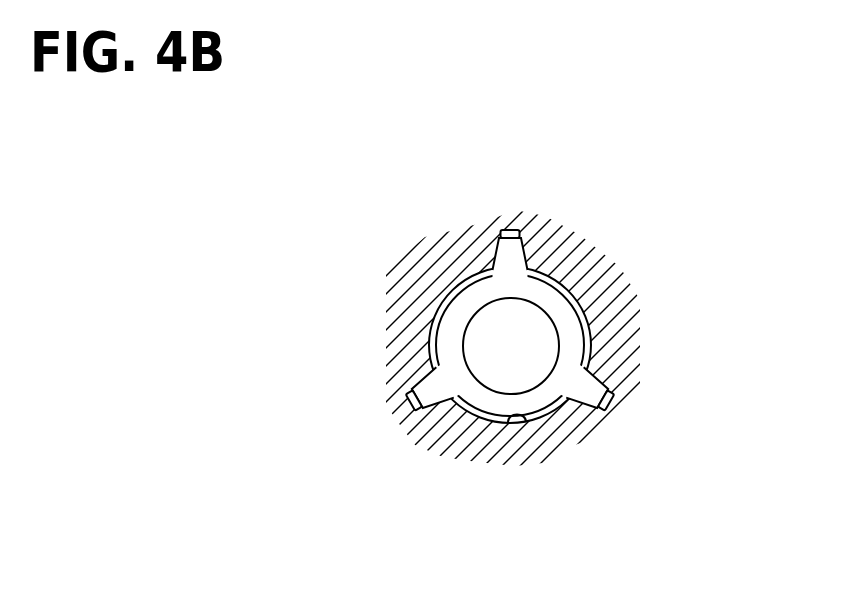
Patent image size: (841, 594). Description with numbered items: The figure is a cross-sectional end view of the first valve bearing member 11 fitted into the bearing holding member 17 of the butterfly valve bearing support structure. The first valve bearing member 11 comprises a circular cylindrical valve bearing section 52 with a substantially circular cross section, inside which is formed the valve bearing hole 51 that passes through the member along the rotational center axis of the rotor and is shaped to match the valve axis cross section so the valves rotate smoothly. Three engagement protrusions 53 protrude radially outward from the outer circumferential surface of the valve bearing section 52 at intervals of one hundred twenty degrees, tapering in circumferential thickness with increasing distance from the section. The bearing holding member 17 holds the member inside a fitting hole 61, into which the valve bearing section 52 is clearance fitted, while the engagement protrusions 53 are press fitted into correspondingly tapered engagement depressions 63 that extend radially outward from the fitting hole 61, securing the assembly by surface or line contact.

The first valve bearing member 11 is at (580, 262).
The bearing holding member 17 is at (418, 272).
The valve bearing hole 51 is at (524, 366).
The valve bearing section 52 is at (582, 300).
The engagement protrusions 53 is at (498, 254).
The fitting hole 61 is at (508, 422).
The engagement depressions 63 is at (512, 231).